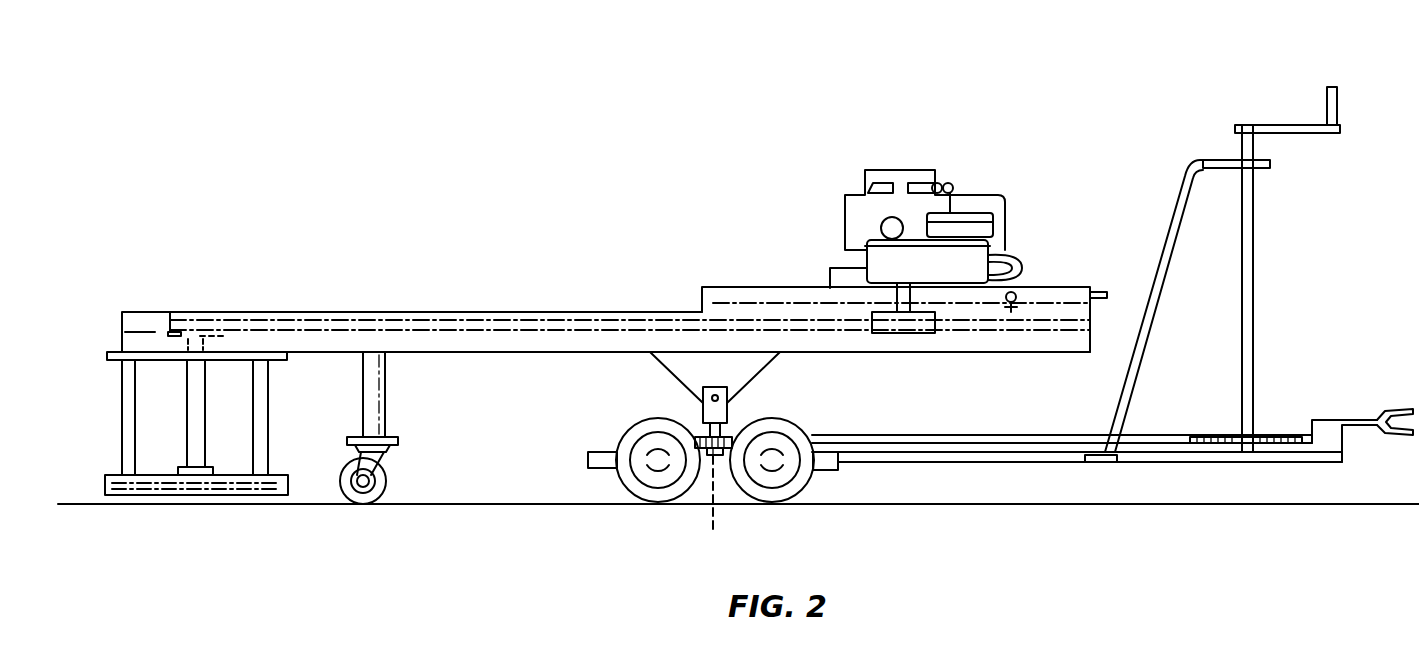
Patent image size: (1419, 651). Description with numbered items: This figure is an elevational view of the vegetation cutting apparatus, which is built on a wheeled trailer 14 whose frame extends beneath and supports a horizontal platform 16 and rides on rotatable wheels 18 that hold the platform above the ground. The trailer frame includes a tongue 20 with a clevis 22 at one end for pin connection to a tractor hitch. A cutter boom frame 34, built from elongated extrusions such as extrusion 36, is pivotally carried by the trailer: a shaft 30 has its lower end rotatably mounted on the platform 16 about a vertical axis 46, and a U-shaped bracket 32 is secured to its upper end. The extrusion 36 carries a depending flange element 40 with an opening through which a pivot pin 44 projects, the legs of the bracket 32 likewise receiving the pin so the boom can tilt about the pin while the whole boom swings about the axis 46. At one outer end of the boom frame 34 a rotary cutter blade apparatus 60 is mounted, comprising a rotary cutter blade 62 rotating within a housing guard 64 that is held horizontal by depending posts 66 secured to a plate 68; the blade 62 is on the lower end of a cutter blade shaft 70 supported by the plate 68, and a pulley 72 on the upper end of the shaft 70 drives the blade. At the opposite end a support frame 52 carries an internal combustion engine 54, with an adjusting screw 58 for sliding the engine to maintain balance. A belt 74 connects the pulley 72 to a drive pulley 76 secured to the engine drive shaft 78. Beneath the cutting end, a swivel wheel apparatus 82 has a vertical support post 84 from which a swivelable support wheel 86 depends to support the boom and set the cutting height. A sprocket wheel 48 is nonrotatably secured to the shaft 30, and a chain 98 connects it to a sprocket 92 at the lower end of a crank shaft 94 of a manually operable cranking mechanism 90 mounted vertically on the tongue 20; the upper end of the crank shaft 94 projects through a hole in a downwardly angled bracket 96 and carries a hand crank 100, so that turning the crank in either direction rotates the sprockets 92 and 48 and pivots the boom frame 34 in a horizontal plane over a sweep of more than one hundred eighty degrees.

The trailer 14 is at (1047, 473).
The horizontal platform 16 is at (587, 448).
The rotatable wheels 18 is at (650, 498).
The tongue 20 is at (945, 458).
The clevis 22 is at (1393, 408).
The shaft 30 is at (712, 453).
The U-shaped bracket 32 is at (727, 410).
The cutter boom frame 34 is at (542, 372).
The extrusion 36 is at (502, 312).
The depending flange element 40 is at (682, 365).
The pivot pin 44 is at (728, 395).
The axis of rotation 46 is at (715, 508).
The sprocket wheel 48 is at (705, 437).
The support frame 52 is at (702, 292).
The internal combustion engine 54 is at (848, 230).
The adjusting screw 58 is at (1033, 293).
The rotary cutter blade apparatus 60 is at (108, 420).
The rotary cutter blade 62 is at (173, 485).
The housing guard 64 is at (112, 480).
The depending posts 66 is at (267, 425).
The plate 68 is at (108, 352).
The cutter blade shaft 70 is at (198, 423).
The pulley 72 is at (180, 312).
The belt 74 is at (378, 327).
The drive pulley 76 is at (922, 333).
The drive shaft 78 is at (895, 295).
The swivel wheel apparatus 82 is at (425, 383).
The vertical support post 84 is at (373, 416).
The swivelable support wheel 86 is at (363, 498).
The cranking mechanism 90 is at (1283, 253).
The sprocket 92 is at (1273, 437).
The crank shaft 94 is at (1248, 290).
The bracket 96 is at (1170, 237).
The chain 98 is at (980, 435).
The hand crank 100 is at (1328, 108).